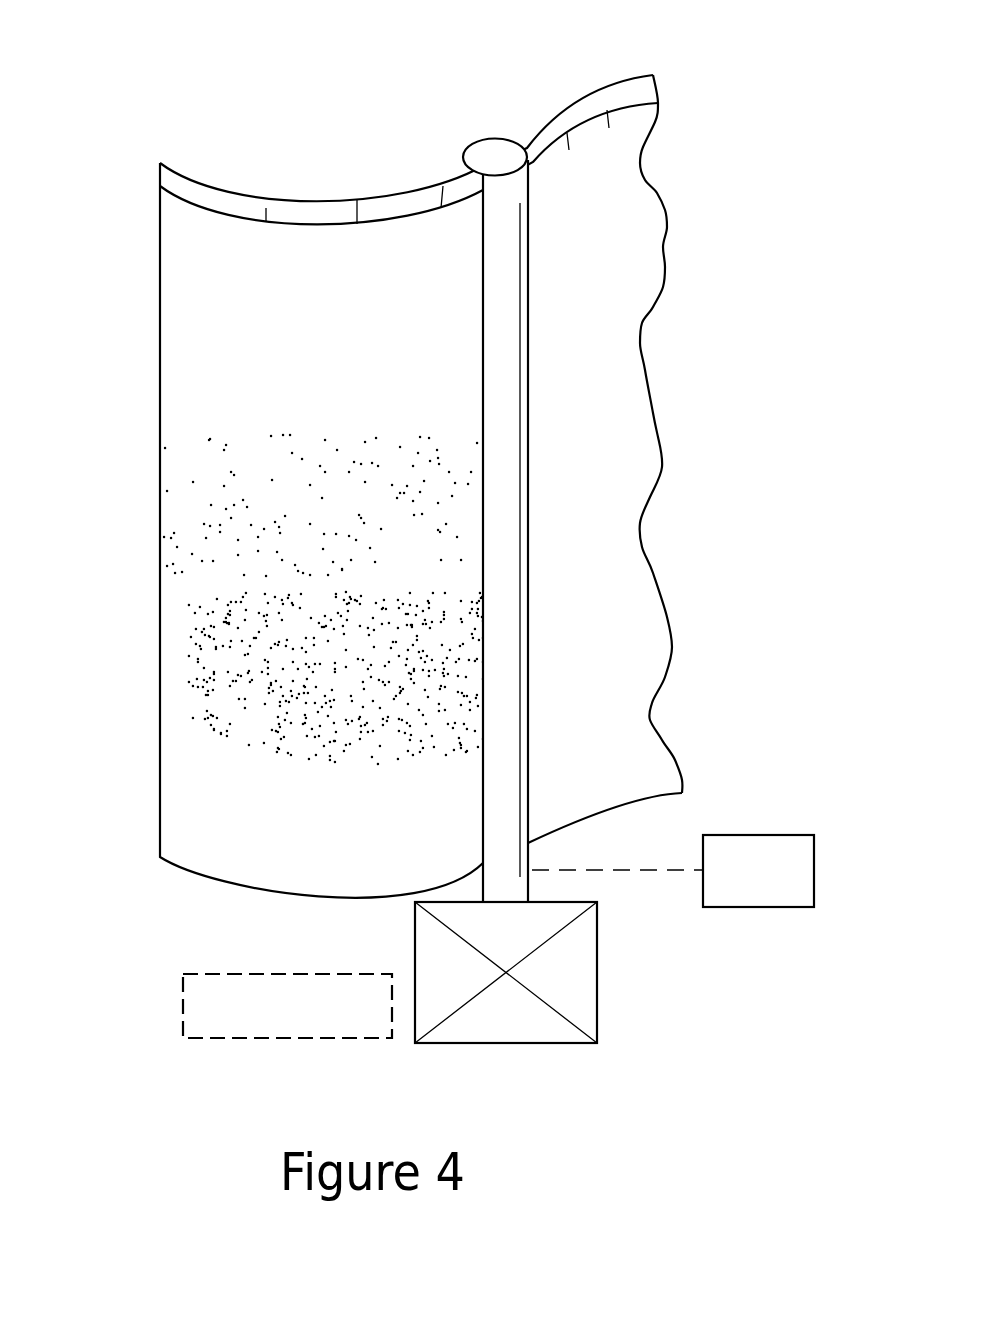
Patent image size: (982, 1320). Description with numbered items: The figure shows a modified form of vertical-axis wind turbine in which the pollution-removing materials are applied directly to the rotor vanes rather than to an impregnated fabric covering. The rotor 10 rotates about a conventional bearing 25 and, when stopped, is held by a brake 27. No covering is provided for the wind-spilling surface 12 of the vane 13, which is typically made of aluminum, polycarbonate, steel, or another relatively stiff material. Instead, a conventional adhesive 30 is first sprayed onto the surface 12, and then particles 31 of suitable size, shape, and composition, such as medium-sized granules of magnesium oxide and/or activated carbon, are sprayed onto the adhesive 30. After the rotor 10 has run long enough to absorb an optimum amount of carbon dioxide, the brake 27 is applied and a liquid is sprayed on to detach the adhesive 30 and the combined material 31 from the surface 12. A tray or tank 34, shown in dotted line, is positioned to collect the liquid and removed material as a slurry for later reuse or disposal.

The rotor 10 is at (116, 106).
The wind-spilling surface 12 is at (322, 245).
The vane 13 is at (128, 801).
The bearing 25 is at (582, 980).
The brake 27 is at (767, 835).
The adhesive 30 is at (196, 468).
The particles 31 is at (196, 634).
The tray or tank 34 is at (183, 1005).